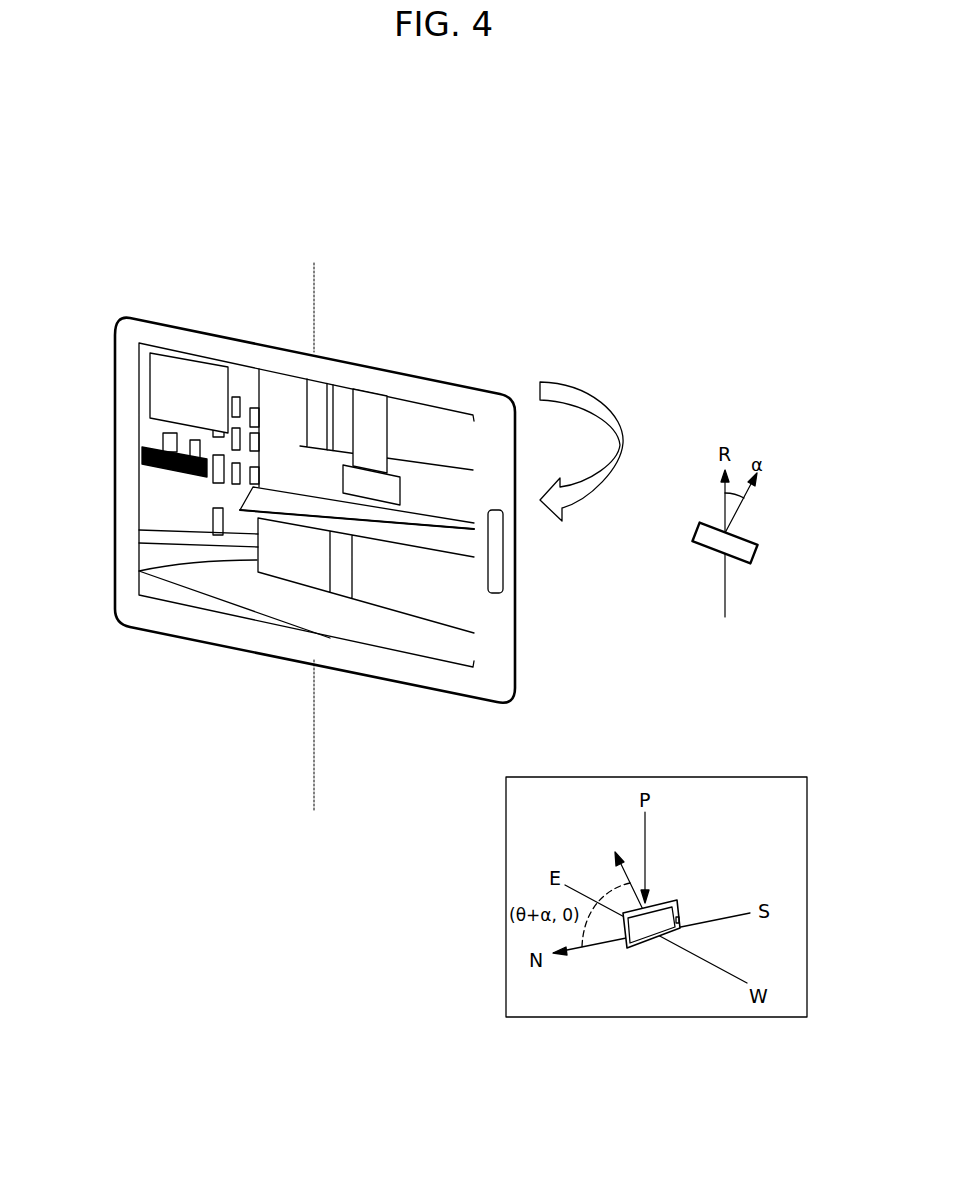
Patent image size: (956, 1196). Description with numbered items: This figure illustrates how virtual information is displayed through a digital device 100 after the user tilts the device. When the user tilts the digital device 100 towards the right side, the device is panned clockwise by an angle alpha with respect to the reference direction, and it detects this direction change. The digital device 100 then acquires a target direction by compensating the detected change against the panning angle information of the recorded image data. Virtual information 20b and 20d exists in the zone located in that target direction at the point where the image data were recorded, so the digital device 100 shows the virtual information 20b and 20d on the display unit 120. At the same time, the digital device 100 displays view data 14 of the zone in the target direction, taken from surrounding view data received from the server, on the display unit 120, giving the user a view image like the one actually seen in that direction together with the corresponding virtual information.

The view data 14 is at (217, 585).
The virtual information 20b is at (142, 452).
The virtual information 20d is at (365, 470).
The digital device 100 is at (445, 695).
The display unit 120 is at (368, 648).